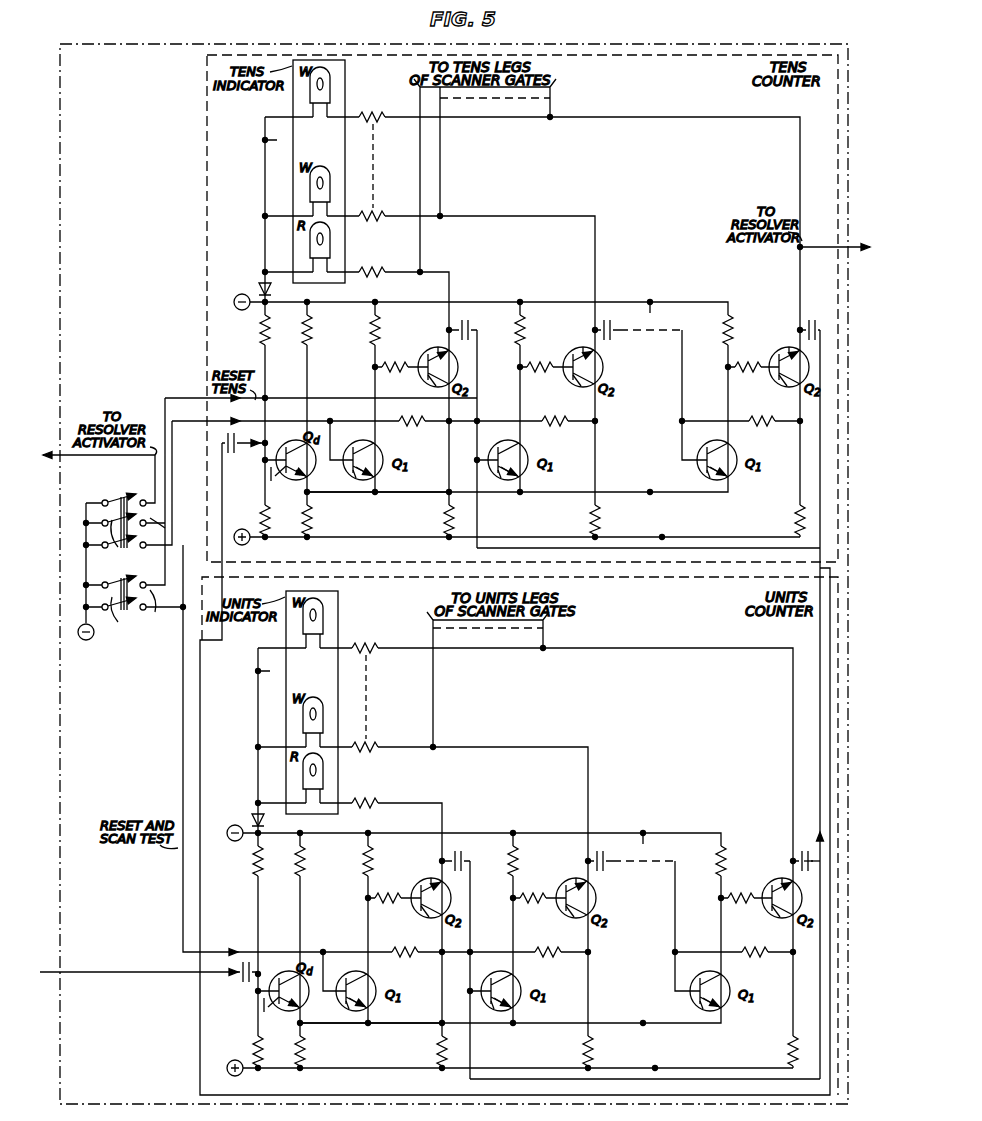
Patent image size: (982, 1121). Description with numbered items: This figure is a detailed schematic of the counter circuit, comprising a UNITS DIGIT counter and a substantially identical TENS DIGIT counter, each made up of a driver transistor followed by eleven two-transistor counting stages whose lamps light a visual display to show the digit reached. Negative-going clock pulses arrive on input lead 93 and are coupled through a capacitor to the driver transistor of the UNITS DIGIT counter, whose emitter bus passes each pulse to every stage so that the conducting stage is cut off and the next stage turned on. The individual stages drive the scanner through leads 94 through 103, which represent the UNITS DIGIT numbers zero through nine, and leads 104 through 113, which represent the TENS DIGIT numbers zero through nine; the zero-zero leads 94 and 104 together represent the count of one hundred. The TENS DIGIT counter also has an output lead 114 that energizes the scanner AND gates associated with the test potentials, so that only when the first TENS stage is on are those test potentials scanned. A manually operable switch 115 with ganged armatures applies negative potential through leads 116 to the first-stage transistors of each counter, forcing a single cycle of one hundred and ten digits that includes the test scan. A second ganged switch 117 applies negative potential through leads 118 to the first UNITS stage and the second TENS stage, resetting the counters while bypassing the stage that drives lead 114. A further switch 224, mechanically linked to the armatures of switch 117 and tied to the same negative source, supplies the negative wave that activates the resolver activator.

The output lead 114 is at (418, 103).
The lead 104 is at (441, 103).
The lead 113 is at (551, 105).
The lead 94 is at (432, 637).
The lead 103 is at (545, 637).
The switch 224 is at (135, 492).
The switch 117 is at (115, 544).
The switch 115 is at (117, 618).
The leads 116 is at (152, 608).
The leads 118 is at (165, 531).
The input lead 93 is at (172, 972).